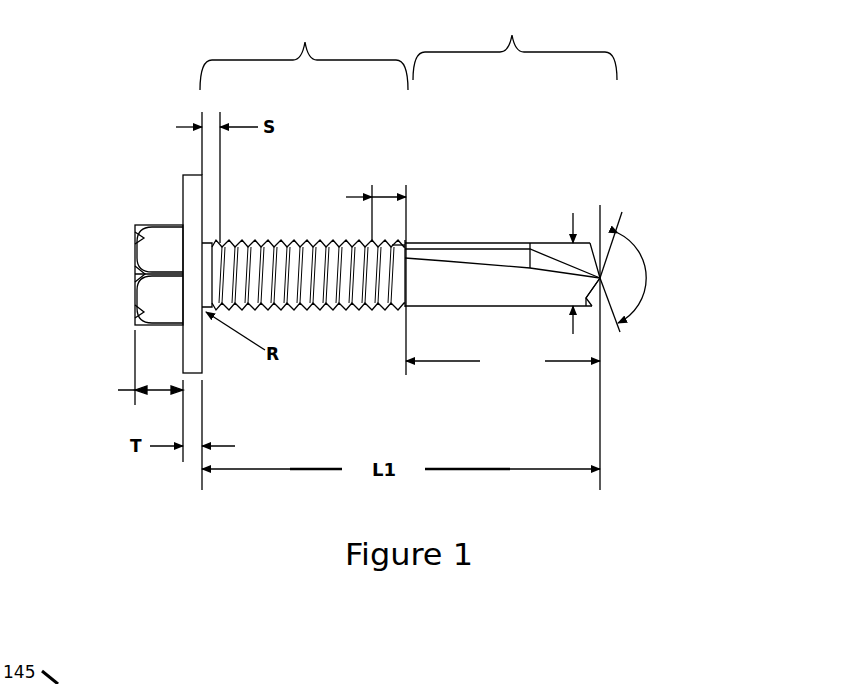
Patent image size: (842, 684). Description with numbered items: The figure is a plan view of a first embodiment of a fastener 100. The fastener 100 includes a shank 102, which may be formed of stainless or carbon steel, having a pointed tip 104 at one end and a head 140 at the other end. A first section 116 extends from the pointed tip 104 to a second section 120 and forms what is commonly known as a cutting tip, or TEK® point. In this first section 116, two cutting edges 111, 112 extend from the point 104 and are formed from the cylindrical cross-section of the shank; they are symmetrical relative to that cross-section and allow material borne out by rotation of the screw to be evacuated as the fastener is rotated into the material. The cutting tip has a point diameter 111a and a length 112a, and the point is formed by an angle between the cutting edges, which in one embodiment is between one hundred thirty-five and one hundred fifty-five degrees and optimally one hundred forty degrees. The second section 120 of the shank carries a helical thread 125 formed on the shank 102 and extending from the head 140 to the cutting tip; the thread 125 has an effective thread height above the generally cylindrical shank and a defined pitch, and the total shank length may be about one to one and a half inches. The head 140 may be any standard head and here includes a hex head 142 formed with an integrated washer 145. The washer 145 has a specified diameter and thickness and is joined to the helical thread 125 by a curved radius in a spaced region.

The fastener 100 is at (455, 248).
The shank 102 is at (413, 260).
The pointed tip 104 is at (600, 278).
The cutting edge 111 is at (503, 243).
The point diameter 111a is at (585, 248).
The cutting edge 112 is at (588, 300).
The length 112a is at (503, 337).
The first section 116 is at (557, 248).
The second section 120 is at (304, 52).
The helical thread 125 is at (300, 297).
The head 140 is at (109, 243).
The hex head 142 is at (168, 222).
The washer 145 is at (192, 185).